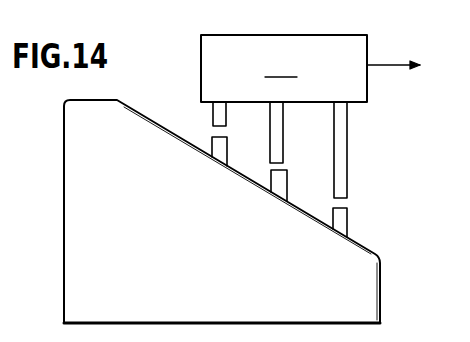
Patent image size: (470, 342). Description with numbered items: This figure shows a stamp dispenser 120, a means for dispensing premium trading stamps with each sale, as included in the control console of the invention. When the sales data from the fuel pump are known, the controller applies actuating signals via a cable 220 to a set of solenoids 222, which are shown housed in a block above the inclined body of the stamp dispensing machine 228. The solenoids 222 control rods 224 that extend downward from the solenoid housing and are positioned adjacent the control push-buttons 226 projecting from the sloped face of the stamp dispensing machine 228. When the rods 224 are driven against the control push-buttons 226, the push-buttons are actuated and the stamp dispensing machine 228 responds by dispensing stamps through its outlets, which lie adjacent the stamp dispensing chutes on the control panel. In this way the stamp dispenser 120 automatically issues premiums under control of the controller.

The stamp dispenser 120 is at (173, 83).
The cable 220 is at (388, 62).
The solenoids 222 is at (284, 68).
The rods 224 is at (348, 152).
The control push-buttons 226 is at (349, 222).
The stamp dispensing machine 228 is at (78, 179).